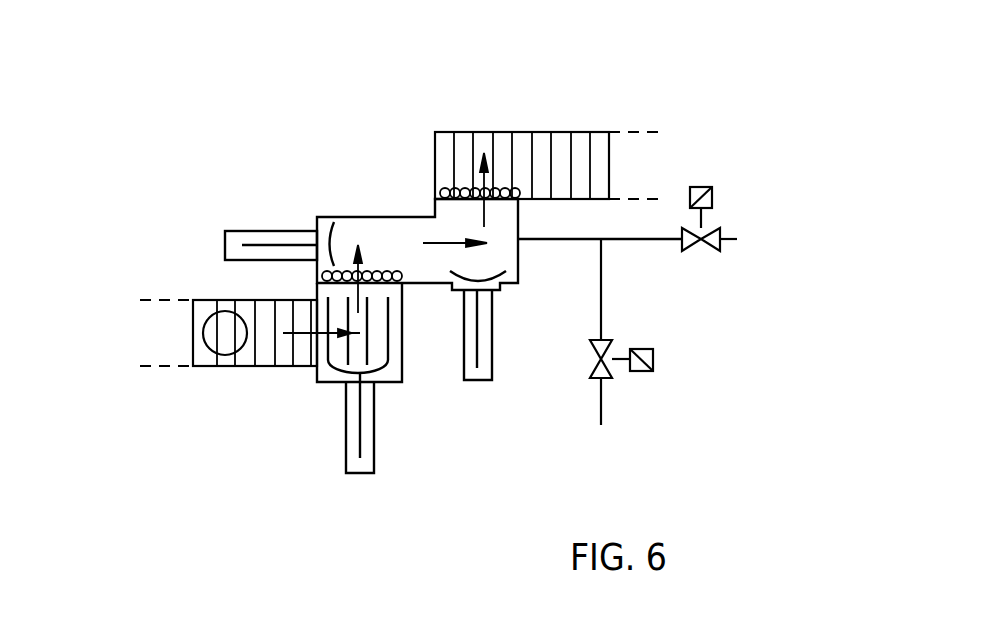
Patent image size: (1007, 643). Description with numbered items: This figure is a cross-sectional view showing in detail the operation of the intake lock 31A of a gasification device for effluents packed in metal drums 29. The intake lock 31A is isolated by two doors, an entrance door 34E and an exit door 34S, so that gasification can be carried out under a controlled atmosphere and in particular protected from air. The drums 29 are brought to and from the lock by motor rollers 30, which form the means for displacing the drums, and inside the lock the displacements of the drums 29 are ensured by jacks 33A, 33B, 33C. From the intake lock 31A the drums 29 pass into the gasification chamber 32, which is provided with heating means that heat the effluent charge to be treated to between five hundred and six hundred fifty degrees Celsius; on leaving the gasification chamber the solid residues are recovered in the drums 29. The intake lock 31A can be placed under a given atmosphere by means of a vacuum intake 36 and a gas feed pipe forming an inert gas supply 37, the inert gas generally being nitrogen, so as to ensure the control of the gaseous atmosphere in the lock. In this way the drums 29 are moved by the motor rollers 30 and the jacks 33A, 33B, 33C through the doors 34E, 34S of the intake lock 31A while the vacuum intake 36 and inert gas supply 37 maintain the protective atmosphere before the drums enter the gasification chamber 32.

The drum 29 is at (237, 367).
The motor rollers 30 is at (609, 165).
The intake lock 31A is at (387, 215).
The gasification chamber 32 is at (500, 142).
The jack 33A is at (360, 473).
The jack 33B is at (223, 255).
The jack 33C is at (495, 377).
The entrance door 34E is at (363, 300).
The exit door 34S is at (472, 183).
The vacuum intake 36 is at (733, 238).
The inert gas supply 37 is at (603, 407).